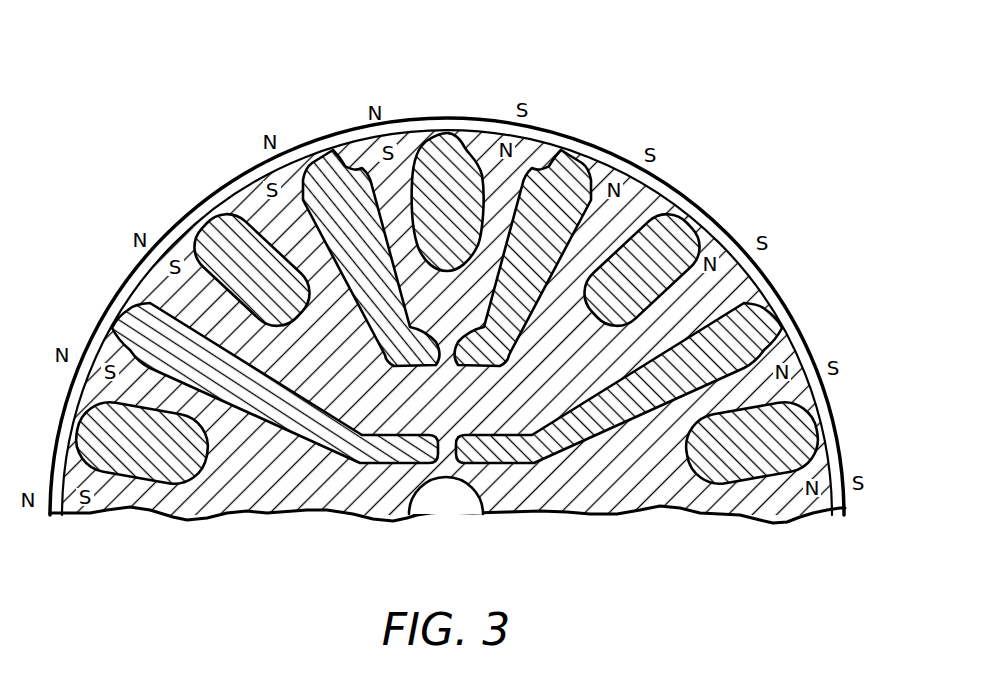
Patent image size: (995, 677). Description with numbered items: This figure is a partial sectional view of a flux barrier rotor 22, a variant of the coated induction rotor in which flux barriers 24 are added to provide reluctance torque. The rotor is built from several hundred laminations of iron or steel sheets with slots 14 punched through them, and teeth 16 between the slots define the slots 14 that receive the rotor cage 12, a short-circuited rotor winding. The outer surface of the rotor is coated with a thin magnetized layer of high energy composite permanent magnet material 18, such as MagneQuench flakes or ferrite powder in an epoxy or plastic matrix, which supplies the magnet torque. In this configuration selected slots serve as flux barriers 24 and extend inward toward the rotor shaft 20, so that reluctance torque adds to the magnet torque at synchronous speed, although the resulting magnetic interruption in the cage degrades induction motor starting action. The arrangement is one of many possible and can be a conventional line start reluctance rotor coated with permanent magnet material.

The rotor cage 12 is at (207, 222).
The slots 14 is at (228, 195).
The teeth 16 is at (258, 197).
The permanent magnet material 18 is at (313, 150).
The rotor shaft 20 is at (443, 512).
The flux barrier rotor 22 is at (563, 477).
The flux barriers 24 is at (357, 470).